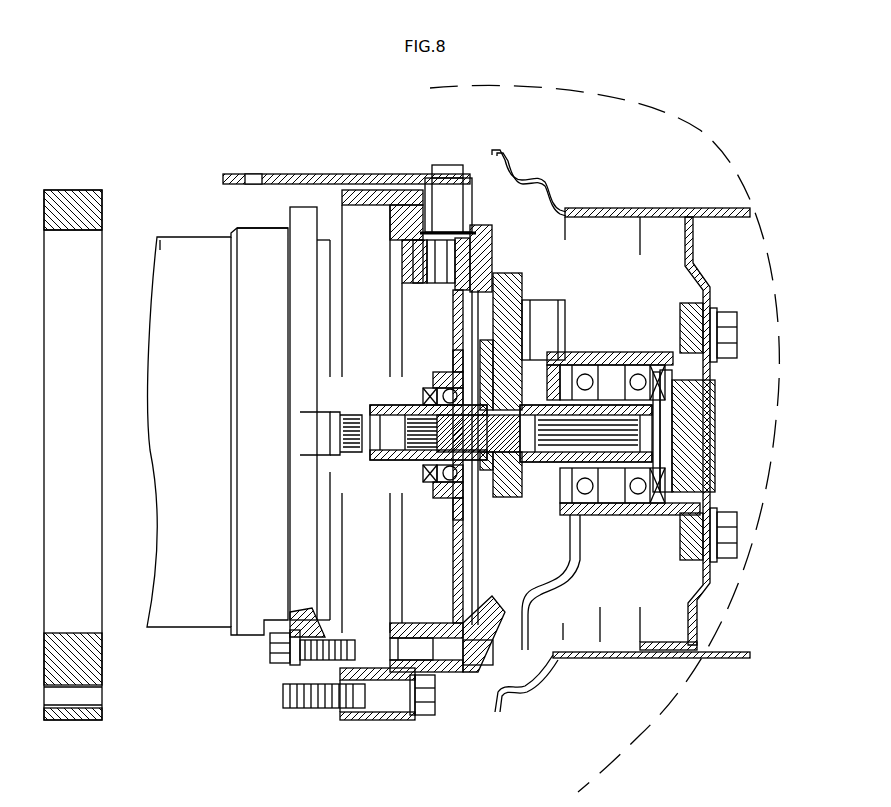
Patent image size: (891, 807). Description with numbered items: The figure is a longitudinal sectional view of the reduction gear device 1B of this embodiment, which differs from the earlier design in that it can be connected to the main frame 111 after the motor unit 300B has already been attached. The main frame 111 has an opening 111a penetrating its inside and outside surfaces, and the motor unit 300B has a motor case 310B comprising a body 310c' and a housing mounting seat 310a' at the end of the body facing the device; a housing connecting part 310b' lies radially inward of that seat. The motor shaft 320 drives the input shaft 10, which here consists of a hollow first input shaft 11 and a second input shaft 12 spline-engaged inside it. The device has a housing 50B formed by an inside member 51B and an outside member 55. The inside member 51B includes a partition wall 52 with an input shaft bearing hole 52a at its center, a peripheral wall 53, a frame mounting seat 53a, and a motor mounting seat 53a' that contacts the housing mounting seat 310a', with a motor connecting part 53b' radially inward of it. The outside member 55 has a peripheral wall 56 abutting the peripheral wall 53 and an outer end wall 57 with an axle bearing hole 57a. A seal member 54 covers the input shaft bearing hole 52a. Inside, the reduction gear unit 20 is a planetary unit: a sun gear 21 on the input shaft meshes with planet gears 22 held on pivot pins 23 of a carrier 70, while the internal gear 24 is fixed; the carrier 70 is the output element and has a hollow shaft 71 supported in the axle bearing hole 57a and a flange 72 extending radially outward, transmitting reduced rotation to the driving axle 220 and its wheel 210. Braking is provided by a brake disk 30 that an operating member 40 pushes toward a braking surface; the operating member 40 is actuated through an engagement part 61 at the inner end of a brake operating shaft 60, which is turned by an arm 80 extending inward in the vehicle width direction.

The reduction gear device 1B is at (742, 160).
The main frame 111 is at (72, 190).
The opening 111a is at (58, 235).
The motor case 310B is at (185, 212).
The housing mounting seat 310a' is at (231, 190).
The housing connecting part 310b' is at (296, 380).
The body 310c' is at (154, 228).
The motor unit 300B is at (212, 435).
The motor shaft 320 is at (300, 512).
The arm 80 is at (313, 176).
The motor connecting part 53b' is at (382, 236).
The brake operating shaft 60 is at (445, 215).
The engagement part 61 is at (437, 267).
The housing 50B is at (492, 195).
The operating member 40 is at (517, 190).
The internal gear 24 is at (566, 230).
The peripheral wall 56 is at (478, 226).
The outer end wall 57 is at (690, 370).
The outside member 55 is at (690, 97).
The wheel 210 is at (705, 270).
The flange 72 is at (605, 335).
The planet gears 22 is at (505, 298).
The pivot pins 23 is at (553, 335).
The reduction gear unit 20 is at (580, 296).
The seal member 54 is at (712, 378).
The axle bearing hole 57a is at (662, 393).
The driving axle 220 is at (645, 447).
The first input shaft 11 is at (432, 463).
The second input shaft 12 is at (470, 512).
The input shaft 10 is at (440, 555).
The brake disk 30 is at (455, 313).
The input shaft bearing hole 52a is at (418, 398).
The partition wall 52 is at (455, 582).
The motor mounting seat 53a' is at (387, 634).
The peripheral wall 53 is at (448, 660).
The frame mounting seat 53a is at (359, 715).
The inside member 51B is at (505, 680).
The carrier 70 is at (605, 657).
The hollow shaft 71 is at (668, 652).
The sun gear 21 is at (552, 690).